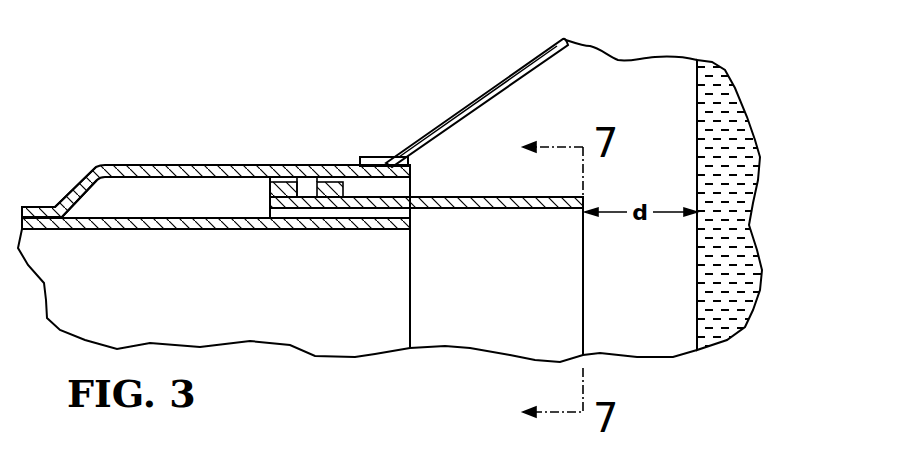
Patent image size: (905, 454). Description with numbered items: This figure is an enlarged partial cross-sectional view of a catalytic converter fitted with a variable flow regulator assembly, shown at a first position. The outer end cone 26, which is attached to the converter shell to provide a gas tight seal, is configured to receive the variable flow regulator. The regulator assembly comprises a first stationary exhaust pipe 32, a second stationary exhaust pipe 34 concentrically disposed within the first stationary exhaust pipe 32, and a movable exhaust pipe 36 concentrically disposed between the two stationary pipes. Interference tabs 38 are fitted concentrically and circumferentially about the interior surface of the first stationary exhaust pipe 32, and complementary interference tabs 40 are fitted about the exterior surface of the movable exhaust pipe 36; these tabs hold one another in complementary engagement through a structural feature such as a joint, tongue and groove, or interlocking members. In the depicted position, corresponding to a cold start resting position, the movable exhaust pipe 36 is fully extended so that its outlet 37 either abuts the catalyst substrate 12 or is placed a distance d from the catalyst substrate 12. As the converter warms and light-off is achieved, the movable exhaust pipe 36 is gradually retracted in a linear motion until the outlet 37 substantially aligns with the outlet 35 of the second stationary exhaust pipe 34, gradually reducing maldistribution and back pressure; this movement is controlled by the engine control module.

The catalyst substrate 12 is at (740, 195).
The outer end cone 26 is at (430, 133).
The first stationary exhaust pipe 32 is at (145, 165).
The second stationary exhaust pipe 34 is at (97, 217).
The outlet of the second stationary exhaust pipe 35 is at (412, 312).
The movable exhaust pipe 36 is at (488, 198).
The outlet of the movable exhaust pipe 37 is at (585, 309).
The interference tabs 38 is at (336, 184).
The interference tabs 40 is at (285, 186).